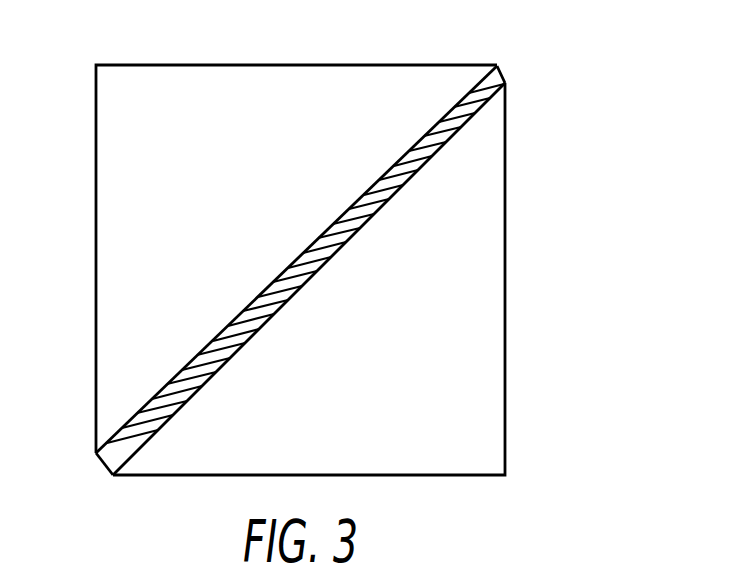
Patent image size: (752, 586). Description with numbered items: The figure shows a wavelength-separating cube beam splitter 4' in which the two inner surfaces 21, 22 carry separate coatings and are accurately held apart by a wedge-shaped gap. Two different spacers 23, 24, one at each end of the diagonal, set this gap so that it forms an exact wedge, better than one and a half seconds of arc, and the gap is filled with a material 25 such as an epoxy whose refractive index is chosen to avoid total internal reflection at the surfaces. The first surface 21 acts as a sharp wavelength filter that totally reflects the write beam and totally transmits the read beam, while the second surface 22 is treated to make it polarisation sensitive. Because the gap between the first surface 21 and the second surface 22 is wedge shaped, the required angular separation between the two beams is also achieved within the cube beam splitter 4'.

The cube beam splitter 4' is at (386, 270).
The first inner surface 21 is at (460, 99).
The second inner surface 22 is at (460, 128).
The first spacer 23 is at (105, 465).
The second spacer 24 is at (503, 73).
The gap-filling material 25 is at (157, 418).